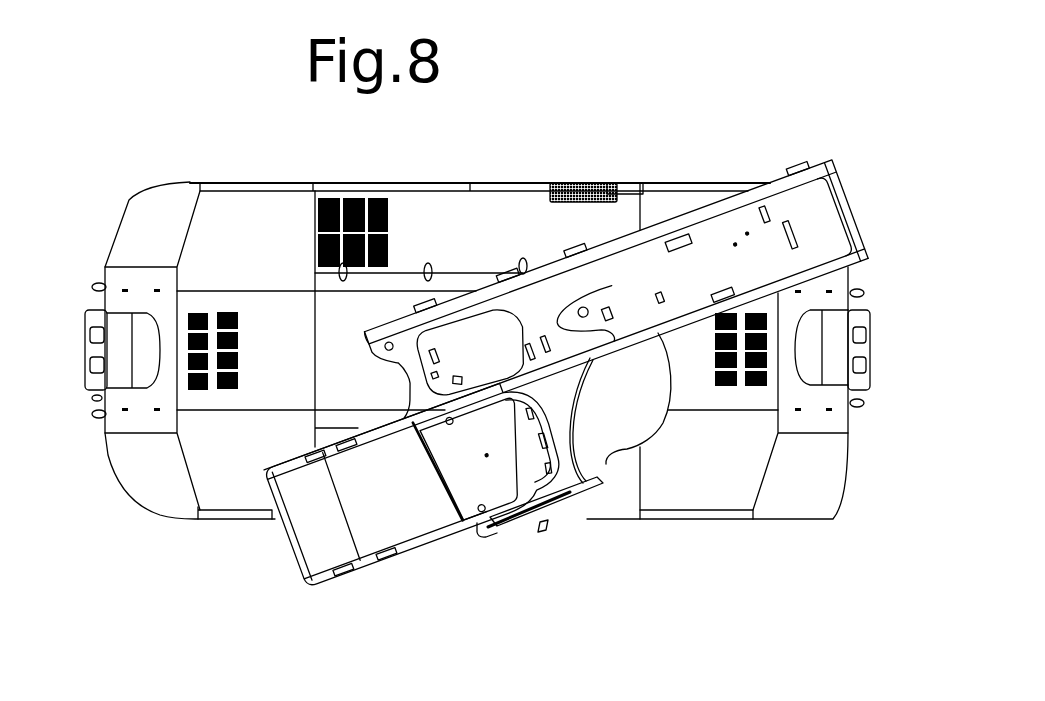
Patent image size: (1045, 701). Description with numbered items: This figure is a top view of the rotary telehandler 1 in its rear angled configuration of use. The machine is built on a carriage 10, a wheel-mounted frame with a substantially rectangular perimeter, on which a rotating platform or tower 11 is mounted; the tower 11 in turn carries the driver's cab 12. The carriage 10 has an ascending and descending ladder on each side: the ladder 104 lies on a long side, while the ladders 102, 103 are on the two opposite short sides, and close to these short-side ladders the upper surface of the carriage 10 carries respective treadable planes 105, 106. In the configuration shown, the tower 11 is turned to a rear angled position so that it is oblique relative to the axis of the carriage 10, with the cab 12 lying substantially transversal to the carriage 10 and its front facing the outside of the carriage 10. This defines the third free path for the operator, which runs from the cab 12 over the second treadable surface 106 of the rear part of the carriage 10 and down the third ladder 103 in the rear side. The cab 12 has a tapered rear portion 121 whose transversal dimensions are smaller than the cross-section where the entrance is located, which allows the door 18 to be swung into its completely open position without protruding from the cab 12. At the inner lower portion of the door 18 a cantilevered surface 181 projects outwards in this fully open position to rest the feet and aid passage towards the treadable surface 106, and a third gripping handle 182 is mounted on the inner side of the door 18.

The rotary telehandler 1 is at (214, 142).
The carriage 10 is at (245, 462).
The ladder 102 is at (118, 348).
The third ladder 103 is at (810, 350).
The ladder 104 is at (578, 165).
The treadable plane 105 is at (197, 398).
The second treadable surface 106 is at (730, 372).
The tower 11 is at (745, 225).
The driver's cab 12 is at (325, 430).
The rear portion 121 is at (527, 387).
The door 18 is at (630, 450).
The cantilevered surface 181 is at (520, 542).
The third gripping handle 182 is at (606, 462).